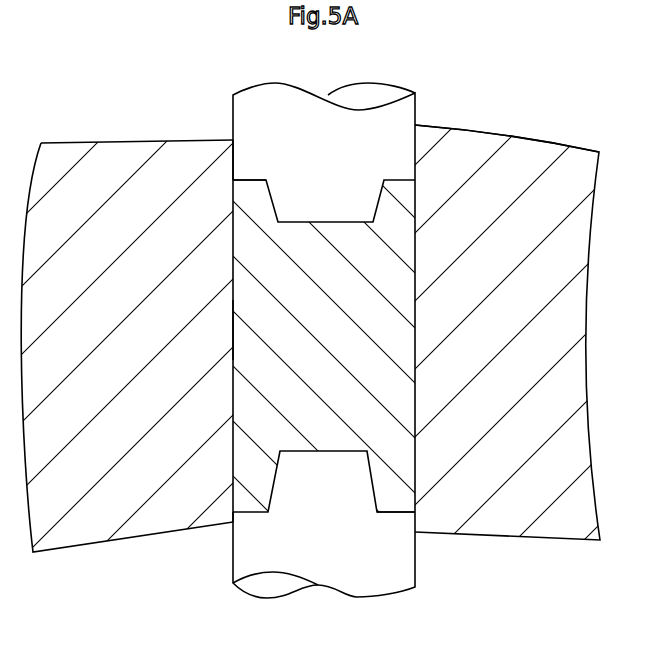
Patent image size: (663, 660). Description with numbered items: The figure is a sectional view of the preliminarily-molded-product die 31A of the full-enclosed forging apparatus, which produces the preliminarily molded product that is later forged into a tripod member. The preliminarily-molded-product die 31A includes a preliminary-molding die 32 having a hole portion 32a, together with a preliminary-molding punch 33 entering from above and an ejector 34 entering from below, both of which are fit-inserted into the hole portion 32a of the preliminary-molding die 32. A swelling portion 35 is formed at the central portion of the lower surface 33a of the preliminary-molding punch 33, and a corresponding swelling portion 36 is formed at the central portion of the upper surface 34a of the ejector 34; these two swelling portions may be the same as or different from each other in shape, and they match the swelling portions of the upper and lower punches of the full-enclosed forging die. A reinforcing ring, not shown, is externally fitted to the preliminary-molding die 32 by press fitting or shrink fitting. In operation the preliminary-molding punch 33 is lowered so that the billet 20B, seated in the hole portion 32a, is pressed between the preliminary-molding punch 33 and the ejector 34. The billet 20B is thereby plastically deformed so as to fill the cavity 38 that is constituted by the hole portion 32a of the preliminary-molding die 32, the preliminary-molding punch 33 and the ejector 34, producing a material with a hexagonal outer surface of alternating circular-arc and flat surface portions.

The preliminarily-molded-product die 31A is at (531, 556).
The preliminary-molding die 32 is at (541, 133).
The hole portion 32a is at (236, 468).
The billet 20B is at (400, 346).
The preliminary-molding punch 33 is at (388, 130).
The lower surface 33a is at (245, 183).
The swelling portion 35 is at (328, 210).
The ejector 34 is at (372, 560).
The upper surface 34a is at (400, 512).
The swelling portion 36 is at (331, 466).
The cavity 38 is at (237, 331).